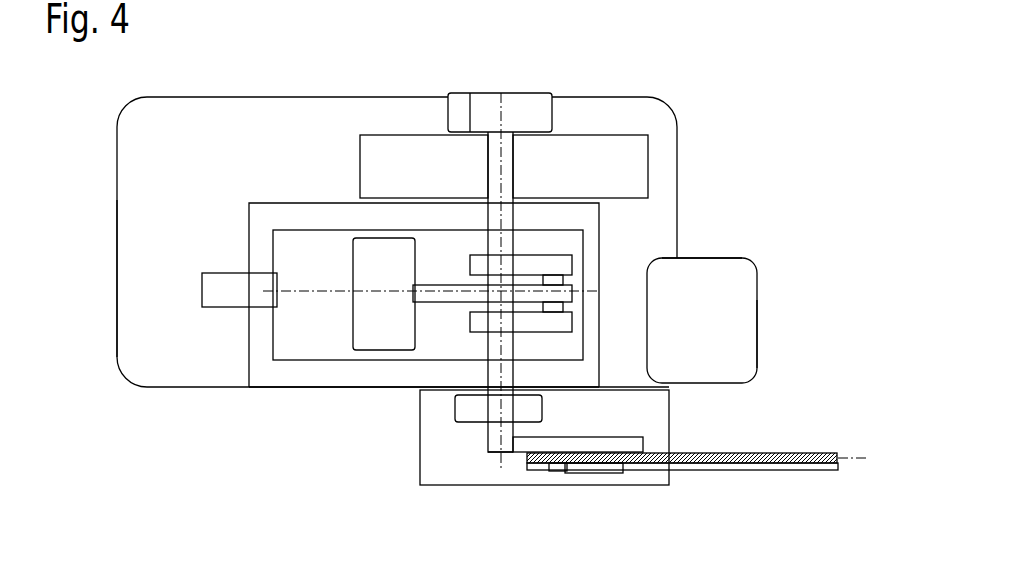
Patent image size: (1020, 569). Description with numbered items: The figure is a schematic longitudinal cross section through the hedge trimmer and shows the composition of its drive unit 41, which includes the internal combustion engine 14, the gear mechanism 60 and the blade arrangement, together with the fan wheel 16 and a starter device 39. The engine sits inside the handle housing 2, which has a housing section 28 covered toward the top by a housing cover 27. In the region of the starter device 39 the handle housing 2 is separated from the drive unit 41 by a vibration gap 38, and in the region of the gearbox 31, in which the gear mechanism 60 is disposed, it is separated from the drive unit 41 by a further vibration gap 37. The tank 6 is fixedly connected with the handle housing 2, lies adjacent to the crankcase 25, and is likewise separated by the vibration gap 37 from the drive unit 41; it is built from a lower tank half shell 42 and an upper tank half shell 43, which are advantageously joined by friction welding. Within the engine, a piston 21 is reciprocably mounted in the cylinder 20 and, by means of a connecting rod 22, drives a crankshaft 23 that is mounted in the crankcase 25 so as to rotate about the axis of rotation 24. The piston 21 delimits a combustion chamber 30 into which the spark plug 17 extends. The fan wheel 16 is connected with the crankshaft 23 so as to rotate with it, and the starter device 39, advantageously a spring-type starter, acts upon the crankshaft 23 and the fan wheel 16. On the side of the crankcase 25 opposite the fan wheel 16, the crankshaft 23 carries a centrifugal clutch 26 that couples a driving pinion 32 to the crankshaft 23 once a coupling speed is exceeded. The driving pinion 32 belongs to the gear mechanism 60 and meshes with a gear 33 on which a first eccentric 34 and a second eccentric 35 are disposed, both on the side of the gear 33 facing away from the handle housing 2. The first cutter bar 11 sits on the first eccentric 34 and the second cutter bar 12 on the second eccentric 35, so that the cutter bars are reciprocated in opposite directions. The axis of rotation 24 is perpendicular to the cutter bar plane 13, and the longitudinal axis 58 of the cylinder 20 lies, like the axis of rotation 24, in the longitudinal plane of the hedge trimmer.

The handle housing 2 is at (117, 200).
The tank 6 is at (743, 283).
The first cutter bar 11 is at (776, 453).
The second cutter bar 12 is at (763, 470).
The cutter bar plane 13 is at (856, 455).
The internal combustion engine 14 is at (207, 372).
The fan wheel 16 is at (430, 155).
The spark plug 17 is at (212, 292).
The cylinder 20 is at (318, 215).
The piston 21 is at (373, 343).
The connecting rod 22 is at (440, 302).
The crankshaft 23 is at (510, 245).
The axis of rotation 24 is at (500, 148).
The crankcase 25 is at (590, 308).
The centrifugal clutch 26 is at (462, 412).
The housing cover 27 is at (117, 249).
The housing section 28 is at (123, 372).
The combustion chamber 30 is at (312, 337).
The gearbox 31 is at (420, 478).
The driving pinion 32 is at (488, 447).
The gear 33 is at (645, 443).
The first eccentric 34 is at (543, 463).
The second eccentric 35 is at (605, 467).
The vibration gap 37 is at (247, 387).
The vibration gap 38 is at (552, 93).
The starter device 39 is at (475, 100).
The drive unit 41 is at (258, 187).
The lower tank half shell 42 is at (757, 360).
The upper tank half shell 43 is at (742, 257).
The longitudinal axis 58 is at (337, 292).
The gear mechanism 60 is at (450, 462).